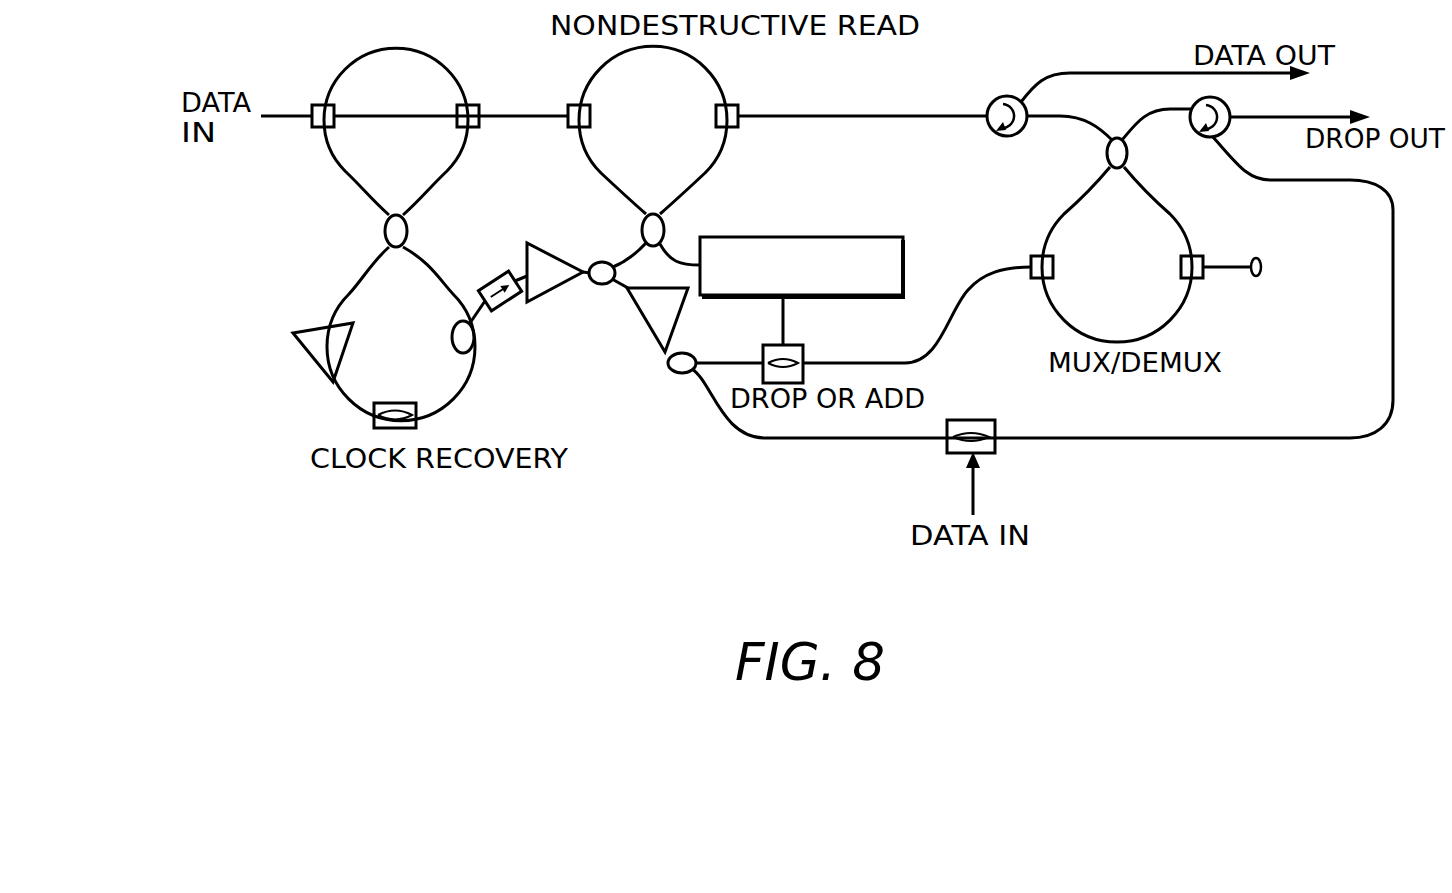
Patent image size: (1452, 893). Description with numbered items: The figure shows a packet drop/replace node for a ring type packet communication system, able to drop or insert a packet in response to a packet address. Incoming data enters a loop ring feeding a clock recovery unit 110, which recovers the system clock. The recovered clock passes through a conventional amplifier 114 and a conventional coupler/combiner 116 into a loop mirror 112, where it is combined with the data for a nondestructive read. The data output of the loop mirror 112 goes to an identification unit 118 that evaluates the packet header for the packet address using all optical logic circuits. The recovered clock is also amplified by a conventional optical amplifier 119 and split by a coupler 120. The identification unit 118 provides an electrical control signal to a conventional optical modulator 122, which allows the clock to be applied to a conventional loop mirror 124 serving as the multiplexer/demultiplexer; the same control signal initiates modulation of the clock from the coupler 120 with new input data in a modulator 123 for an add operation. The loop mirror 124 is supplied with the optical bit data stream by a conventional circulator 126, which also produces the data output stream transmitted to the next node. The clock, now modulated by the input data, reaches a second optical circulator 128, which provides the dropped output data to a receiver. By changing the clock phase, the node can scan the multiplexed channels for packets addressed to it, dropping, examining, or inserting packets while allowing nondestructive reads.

The clock recovery unit 110 is at (304, 227).
The loop mirror 112 is at (670, 124).
The amplifier 114 is at (566, 258).
The coupler/combiner 116 is at (608, 286).
The identification unit 118 is at (818, 237).
The optical amplifier 119 is at (641, 320).
The coupler 120 is at (684, 374).
The optical modulator 122 is at (805, 346).
The modulator 123 is at (1003, 392).
The loop mirror 124 is at (1143, 262).
The circulator 126 is at (1003, 97).
The second optical circulator 128 is at (1218, 98).